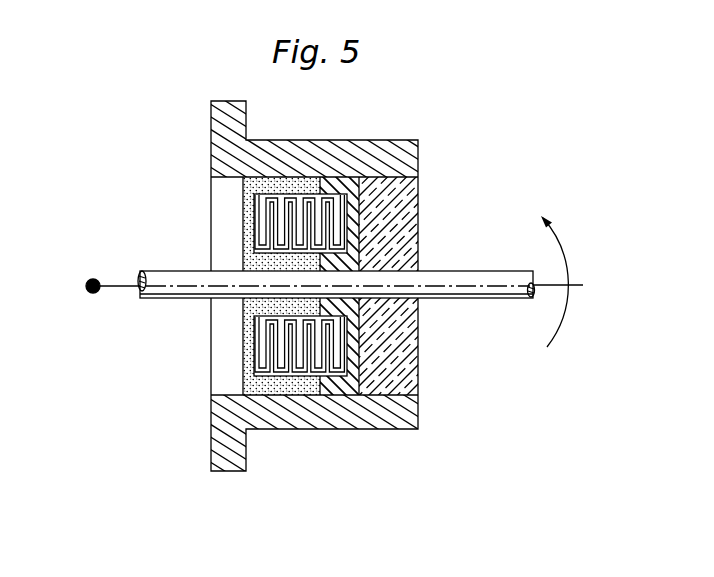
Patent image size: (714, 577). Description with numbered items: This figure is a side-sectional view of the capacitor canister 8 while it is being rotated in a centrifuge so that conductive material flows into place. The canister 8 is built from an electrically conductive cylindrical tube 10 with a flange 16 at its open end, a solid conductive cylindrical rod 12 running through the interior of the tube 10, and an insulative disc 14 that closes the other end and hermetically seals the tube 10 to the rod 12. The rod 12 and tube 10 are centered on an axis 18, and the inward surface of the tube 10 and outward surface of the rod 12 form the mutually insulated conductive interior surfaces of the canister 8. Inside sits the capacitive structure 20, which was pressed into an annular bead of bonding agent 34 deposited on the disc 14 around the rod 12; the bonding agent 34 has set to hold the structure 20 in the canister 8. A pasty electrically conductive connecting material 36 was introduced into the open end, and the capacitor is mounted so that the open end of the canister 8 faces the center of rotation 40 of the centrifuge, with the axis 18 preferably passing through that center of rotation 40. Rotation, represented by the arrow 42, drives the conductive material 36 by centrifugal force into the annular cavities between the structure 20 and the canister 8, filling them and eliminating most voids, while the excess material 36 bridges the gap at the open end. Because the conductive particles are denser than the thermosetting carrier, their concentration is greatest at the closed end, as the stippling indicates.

The capacitor canister 8 is at (199, 427).
The electrically conductive cylindrical tube 10 is at (266, 141).
The cylindrical rod 12 is at (470, 269).
The disc 14 is at (420, 200).
The flange 16 is at (212, 109).
The axis 18 is at (580, 285).
The capacitive structure 20 is at (281, 203).
The bonding agent 34 is at (350, 180).
The electrically conductive solidifiable fluidic connecting material 36 is at (243, 258).
The center of rotation 40 is at (90, 296).
The arrow 42 is at (562, 323).